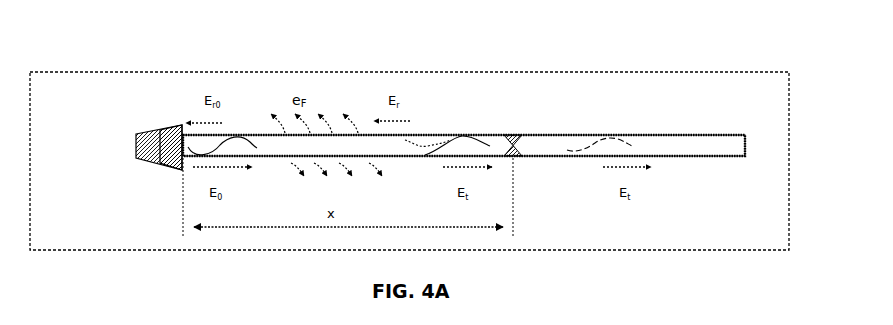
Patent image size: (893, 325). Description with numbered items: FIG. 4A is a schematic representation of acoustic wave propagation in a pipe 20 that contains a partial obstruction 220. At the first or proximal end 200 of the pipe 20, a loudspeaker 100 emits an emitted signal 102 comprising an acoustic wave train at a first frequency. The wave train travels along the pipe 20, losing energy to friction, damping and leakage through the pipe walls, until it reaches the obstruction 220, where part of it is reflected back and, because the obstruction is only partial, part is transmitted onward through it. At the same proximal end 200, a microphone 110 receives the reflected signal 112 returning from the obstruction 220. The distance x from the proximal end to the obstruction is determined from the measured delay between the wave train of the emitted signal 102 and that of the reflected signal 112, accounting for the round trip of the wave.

The loudspeaker 100 is at (145, 143).
The microphone 110 is at (168, 138).
The proximal end 200 is at (185, 127).
The reflected signal 112 is at (417, 133).
The emitted signal 102 is at (462, 133).
The obstruction 220 is at (514, 133).
The pipe 20 is at (650, 133).